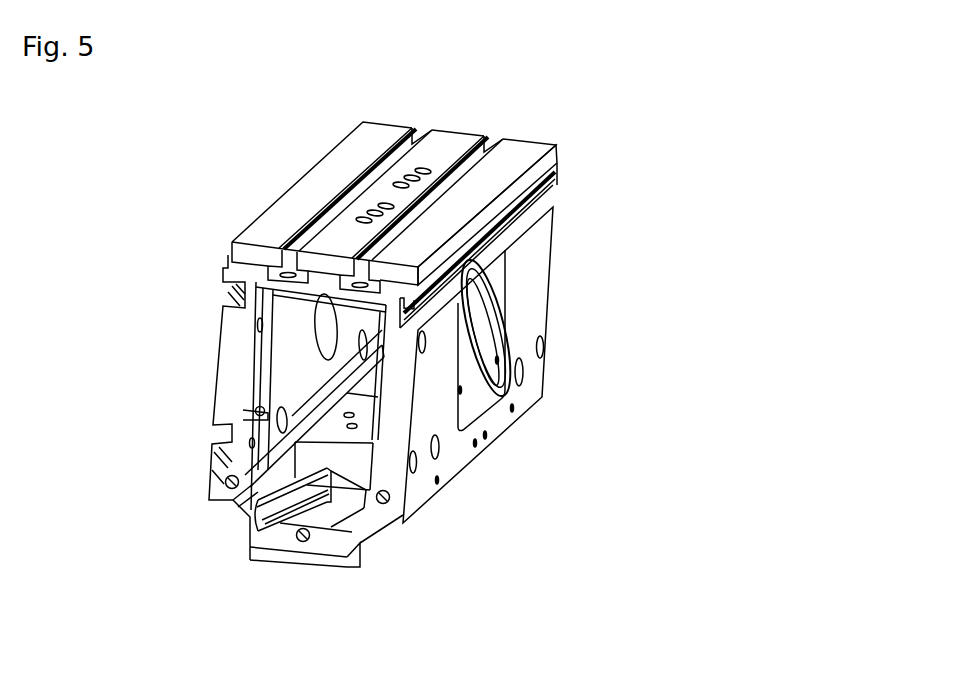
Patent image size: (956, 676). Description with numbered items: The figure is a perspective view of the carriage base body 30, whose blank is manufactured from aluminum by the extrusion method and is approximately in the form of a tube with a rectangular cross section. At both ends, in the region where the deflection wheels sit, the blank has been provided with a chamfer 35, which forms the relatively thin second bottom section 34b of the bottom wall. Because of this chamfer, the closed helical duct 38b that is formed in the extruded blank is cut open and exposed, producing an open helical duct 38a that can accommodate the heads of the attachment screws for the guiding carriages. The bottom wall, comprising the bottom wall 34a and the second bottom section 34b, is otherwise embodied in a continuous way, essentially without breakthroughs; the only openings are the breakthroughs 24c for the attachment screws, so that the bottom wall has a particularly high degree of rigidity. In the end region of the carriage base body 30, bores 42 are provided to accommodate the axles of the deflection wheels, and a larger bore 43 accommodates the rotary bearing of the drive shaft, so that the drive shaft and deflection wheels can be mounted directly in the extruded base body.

The carriage base body 30 is at (668, 106).
The bores for the rotary bearings 43 is at (485, 316).
The bores for the deflection wheel axles 42 is at (523, 377).
The breakthroughs 24c is at (362, 545).
The bottom wall 34a is at (340, 424).
The chamfer 35 is at (343, 465).
The open helical duct 38a is at (262, 525).
The closed helical duct 38b is at (289, 527).
The second bottom section 34b is at (343, 548).